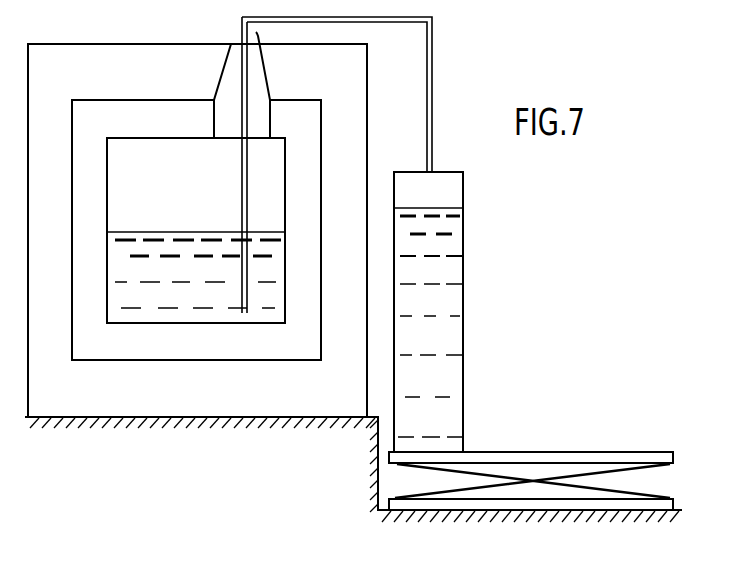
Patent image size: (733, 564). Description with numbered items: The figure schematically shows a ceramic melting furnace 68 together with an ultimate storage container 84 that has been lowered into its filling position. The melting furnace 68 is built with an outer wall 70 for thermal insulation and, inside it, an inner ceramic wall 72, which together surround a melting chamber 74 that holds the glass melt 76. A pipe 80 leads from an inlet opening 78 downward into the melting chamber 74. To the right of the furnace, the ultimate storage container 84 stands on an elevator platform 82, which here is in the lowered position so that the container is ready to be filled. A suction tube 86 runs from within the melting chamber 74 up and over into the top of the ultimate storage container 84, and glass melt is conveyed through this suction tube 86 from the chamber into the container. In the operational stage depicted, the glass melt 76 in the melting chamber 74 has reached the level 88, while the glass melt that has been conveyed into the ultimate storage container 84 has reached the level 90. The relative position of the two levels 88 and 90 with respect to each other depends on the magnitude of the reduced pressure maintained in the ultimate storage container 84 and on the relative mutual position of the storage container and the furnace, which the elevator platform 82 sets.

The melting furnace 68 is at (127, 453).
The outer wall 70 is at (57, 403).
The inner ceramic wall 72 is at (166, 357).
The melting chamber 74 is at (267, 168).
The glass melt 76 is at (275, 302).
The inlet opening 78 is at (237, 43).
The pipe 80 is at (267, 76).
The elevator platform 82 is at (548, 452).
The ultimate storage container 84 is at (450, 308).
The suction tube 86 is at (432, 70).
The level 88 is at (153, 228).
The level 90 is at (451, 201).